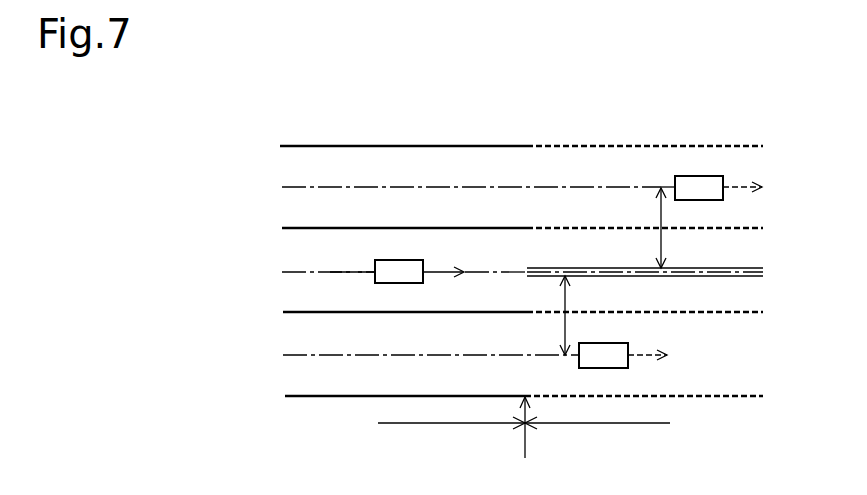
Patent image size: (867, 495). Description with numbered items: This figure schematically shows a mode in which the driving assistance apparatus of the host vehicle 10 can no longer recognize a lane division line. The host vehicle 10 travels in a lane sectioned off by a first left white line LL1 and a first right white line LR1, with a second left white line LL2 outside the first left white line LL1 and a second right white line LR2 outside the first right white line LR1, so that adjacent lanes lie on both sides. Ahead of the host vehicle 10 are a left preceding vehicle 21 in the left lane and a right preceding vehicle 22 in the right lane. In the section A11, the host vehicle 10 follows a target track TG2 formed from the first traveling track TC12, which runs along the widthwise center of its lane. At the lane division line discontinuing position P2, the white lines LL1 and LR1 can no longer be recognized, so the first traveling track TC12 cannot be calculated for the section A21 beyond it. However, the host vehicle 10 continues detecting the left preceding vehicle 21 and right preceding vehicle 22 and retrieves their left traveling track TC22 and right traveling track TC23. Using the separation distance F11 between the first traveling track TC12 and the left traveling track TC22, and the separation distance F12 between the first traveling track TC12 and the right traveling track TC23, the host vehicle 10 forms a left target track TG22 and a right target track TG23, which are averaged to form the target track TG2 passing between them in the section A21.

The second left white line LL2 is at (282, 146).
The left traveling track TC22 is at (522, 187).
The first left white line LL1 is at (284, 228).
The first traveling track TC12 is at (318, 272).
The host vehicle 10 is at (380, 260).
The target track TG2 is at (333, 272).
The left target track TG22 is at (557, 268).
The right target track TG23 is at (557, 276).
The left preceding vehicle 21 is at (708, 176).
The separation distance F11 is at (661, 237).
The first right white line LR1 is at (284, 312).
The separation distance F12 is at (565, 285).
The right traveling track TC23 is at (523, 355).
The right preceding vehicle 22 is at (615, 343).
The second right white line LR2 is at (287, 394).
The section A11 is at (451, 440).
The section A21 is at (597, 440).
The lane division line discontinuing position P2 is at (523, 441).